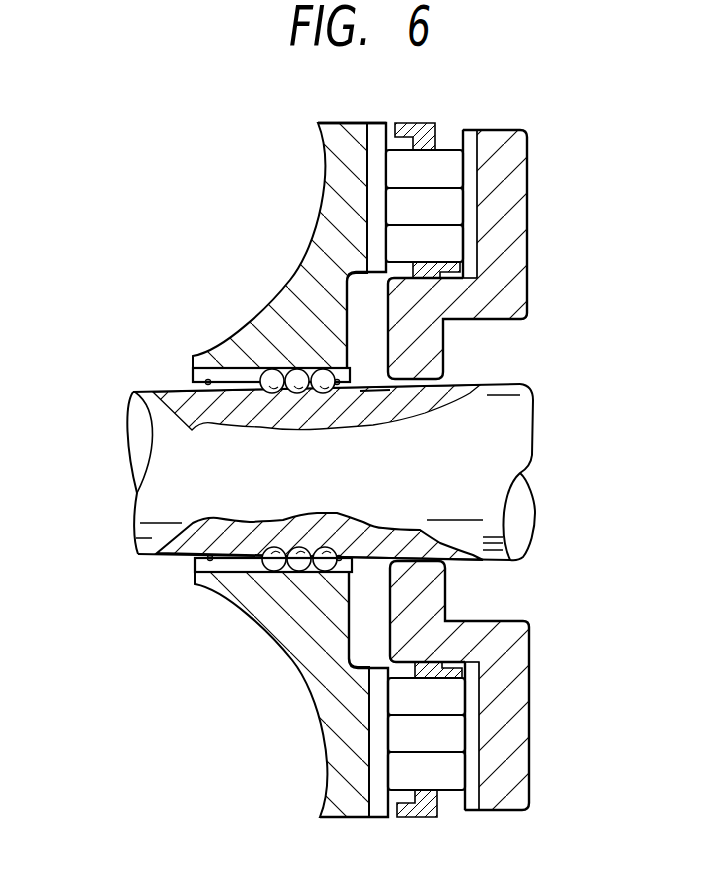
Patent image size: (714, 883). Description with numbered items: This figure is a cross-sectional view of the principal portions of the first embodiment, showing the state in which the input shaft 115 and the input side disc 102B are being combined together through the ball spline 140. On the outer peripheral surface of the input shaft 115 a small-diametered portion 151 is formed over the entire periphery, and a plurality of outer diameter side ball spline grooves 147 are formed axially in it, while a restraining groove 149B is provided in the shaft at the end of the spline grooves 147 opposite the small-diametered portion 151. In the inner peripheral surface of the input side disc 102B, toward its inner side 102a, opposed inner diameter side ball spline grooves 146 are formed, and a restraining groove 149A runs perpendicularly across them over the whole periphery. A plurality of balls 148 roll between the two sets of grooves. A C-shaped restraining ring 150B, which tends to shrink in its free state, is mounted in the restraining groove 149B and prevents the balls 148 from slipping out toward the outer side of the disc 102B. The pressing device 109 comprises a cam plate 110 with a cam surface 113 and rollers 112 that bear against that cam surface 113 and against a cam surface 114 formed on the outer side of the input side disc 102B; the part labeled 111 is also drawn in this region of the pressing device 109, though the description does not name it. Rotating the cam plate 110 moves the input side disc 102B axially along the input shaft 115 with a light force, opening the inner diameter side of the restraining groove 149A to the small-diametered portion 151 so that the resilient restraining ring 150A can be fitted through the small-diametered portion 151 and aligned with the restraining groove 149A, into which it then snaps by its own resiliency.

The inner side 102a is at (296, 270).
The input side disc 102B is at (333, 140).
The pressing device 109 is at (447, 165).
The cam plate 110 is at (517, 162).
The bolt 111 is at (422, 124).
The rollers 112 is at (449, 207).
The cam surface 113 is at (473, 247).
The cam surface 114 is at (372, 182).
The input shaft 115 is at (175, 465).
The ball spline 140 is at (268, 574).
The inner diameter side ball spline grooves 146 is at (402, 594).
The outer diameter side ball spline grooves 147 is at (373, 392).
The balls 148 is at (296, 393).
The restraining groove 149A is at (203, 592).
The restraining groove 149B is at (328, 548).
The restraining ring 150A is at (183, 428).
The restraining ring 150B is at (347, 373).
The small-diametered portion 151 is at (207, 384).